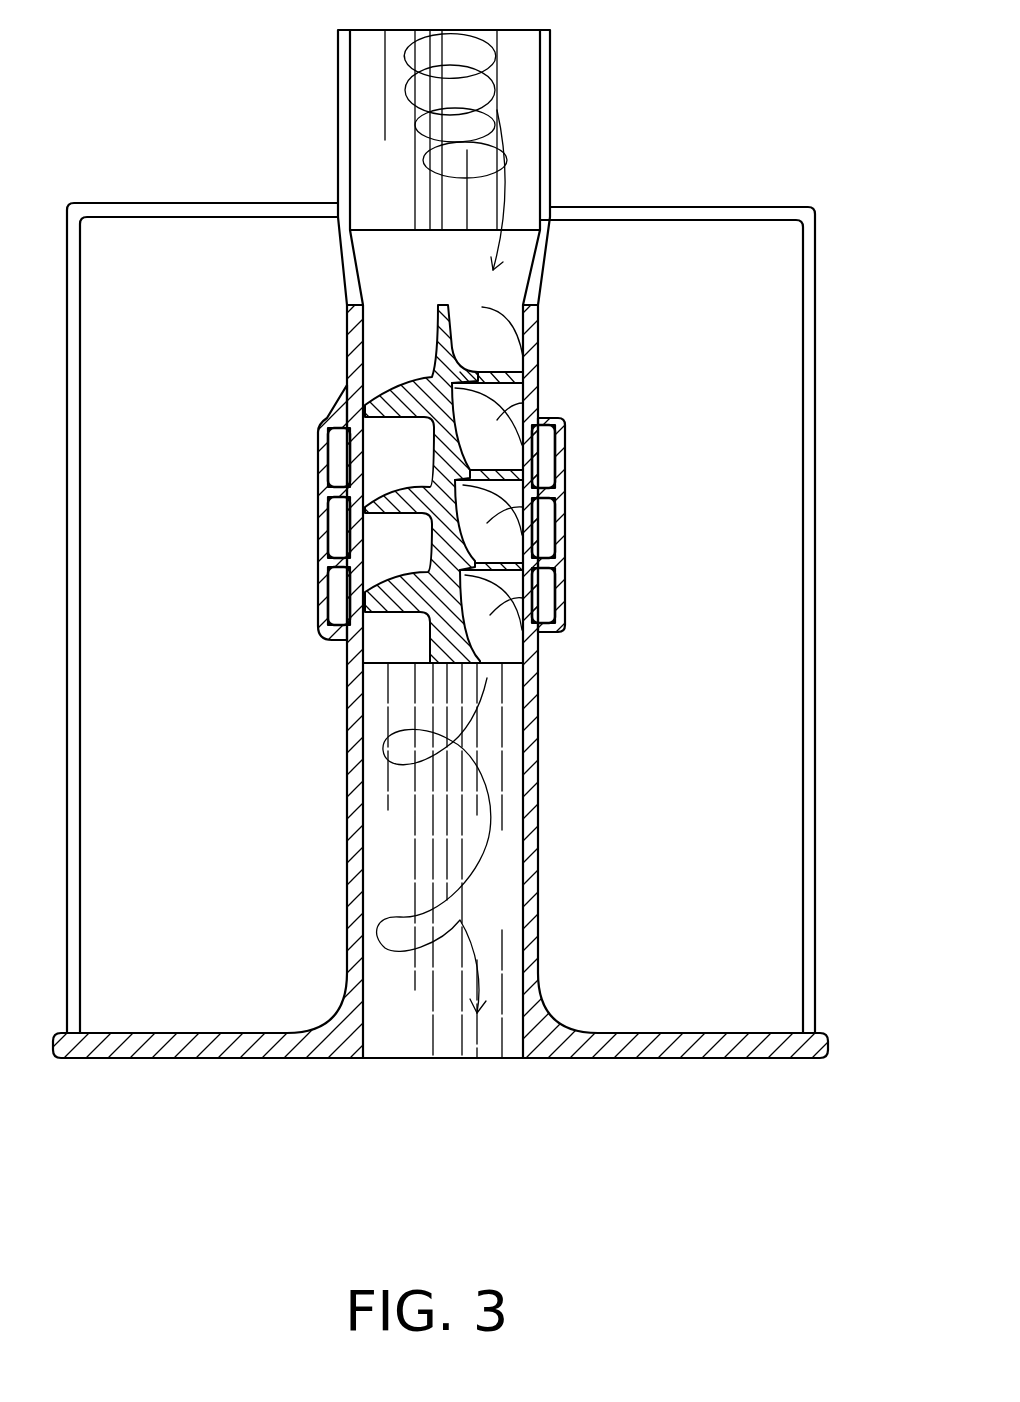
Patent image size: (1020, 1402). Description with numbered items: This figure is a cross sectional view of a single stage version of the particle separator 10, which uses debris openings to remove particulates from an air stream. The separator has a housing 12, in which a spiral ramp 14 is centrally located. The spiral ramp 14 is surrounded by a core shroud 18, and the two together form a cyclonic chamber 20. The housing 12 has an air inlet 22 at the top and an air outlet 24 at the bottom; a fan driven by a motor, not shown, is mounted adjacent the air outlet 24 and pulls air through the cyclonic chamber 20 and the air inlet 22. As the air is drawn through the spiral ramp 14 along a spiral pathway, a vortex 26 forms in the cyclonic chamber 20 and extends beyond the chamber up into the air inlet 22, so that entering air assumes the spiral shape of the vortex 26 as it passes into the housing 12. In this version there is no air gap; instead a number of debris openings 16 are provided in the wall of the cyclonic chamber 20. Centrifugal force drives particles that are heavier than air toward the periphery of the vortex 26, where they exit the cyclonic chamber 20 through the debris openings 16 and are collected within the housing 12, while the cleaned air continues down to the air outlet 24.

The particle separator 10 is at (741, 119).
The housing 12 is at (808, 535).
The spiral ramp 14 is at (533, 411).
The debris openings 16 is at (340, 585).
The core shroud 18 is at (345, 363).
The cyclonic chamber 20 is at (384, 1097).
The air inlet 22 is at (367, 52).
The air outlet 24 is at (487, 1062).
The vortex 26 is at (510, 93).